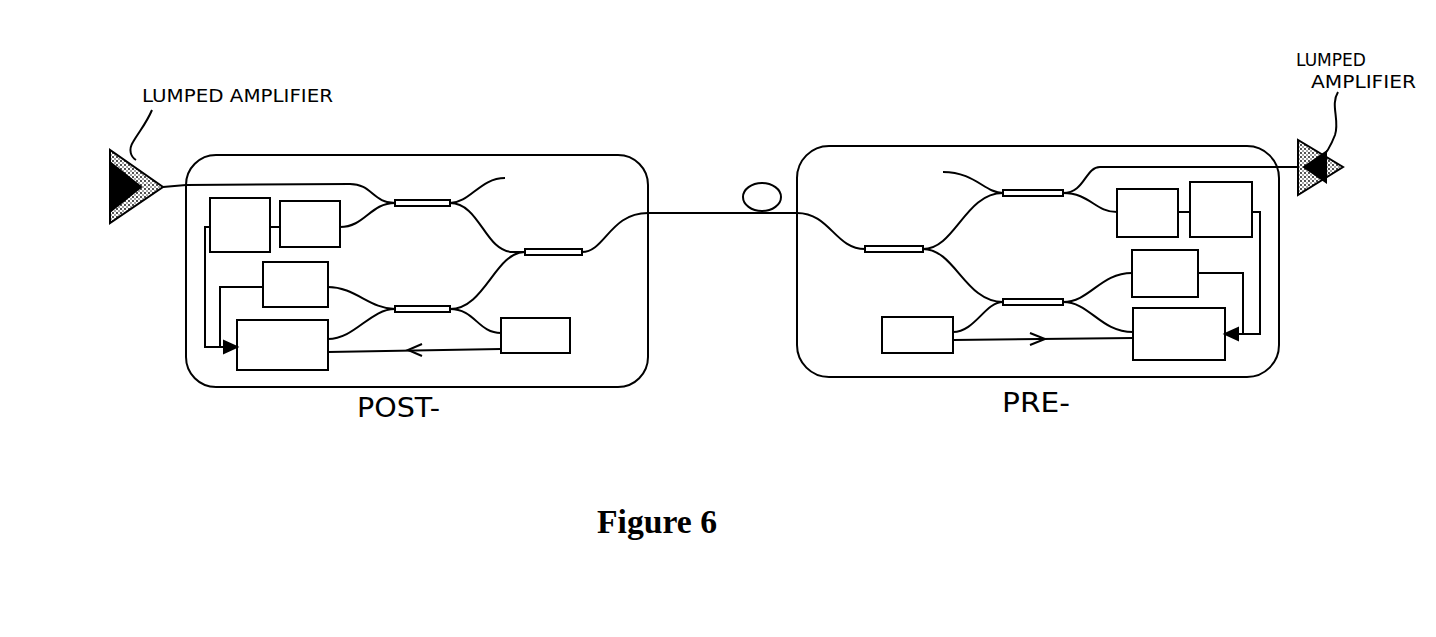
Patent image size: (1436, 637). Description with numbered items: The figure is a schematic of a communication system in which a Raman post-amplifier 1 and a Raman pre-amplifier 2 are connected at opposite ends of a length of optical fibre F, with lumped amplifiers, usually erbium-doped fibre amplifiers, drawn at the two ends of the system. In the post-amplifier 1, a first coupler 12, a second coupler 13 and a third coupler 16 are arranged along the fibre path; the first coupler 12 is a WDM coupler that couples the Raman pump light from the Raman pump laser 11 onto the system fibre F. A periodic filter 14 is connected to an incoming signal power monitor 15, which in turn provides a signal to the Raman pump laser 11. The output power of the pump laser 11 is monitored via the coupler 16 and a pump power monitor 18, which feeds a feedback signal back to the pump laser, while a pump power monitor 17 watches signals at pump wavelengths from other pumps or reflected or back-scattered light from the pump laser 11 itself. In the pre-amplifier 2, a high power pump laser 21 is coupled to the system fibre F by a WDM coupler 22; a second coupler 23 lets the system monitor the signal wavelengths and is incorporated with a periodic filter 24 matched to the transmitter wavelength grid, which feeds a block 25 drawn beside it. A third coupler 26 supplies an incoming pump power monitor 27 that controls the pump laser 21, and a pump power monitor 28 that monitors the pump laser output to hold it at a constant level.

The Raman post-amplifier 1 is at (517, 155).
The Raman pre-amplifier 2 is at (1127, 147).
The optical fibre F is at (700, 213).
The Raman pump laser 11 is at (369, 345).
The first coupler 12 is at (545, 247).
The second coupler 13 is at (422, 198).
The periodic filter 14 is at (310, 224).
The incoming signal power monitor 15 is at (242, 275).
The third coupler 16 is at (422, 305).
The pump power monitor 17 is at (274, 304).
The pump power monitor 18 is at (535, 335).
The pump laser 21 is at (1179, 334).
The coupler 22 is at (890, 245).
The second coupler 23 is at (1028, 190).
The periodic filter 24 is at (1153, 213).
The control circuit 25 is at (1225, 261).
The third coupler 26 is at (1030, 298).
The incoming pump power monitor 27 is at (1187, 292).
The pump power monitor 28 is at (1007, 335).